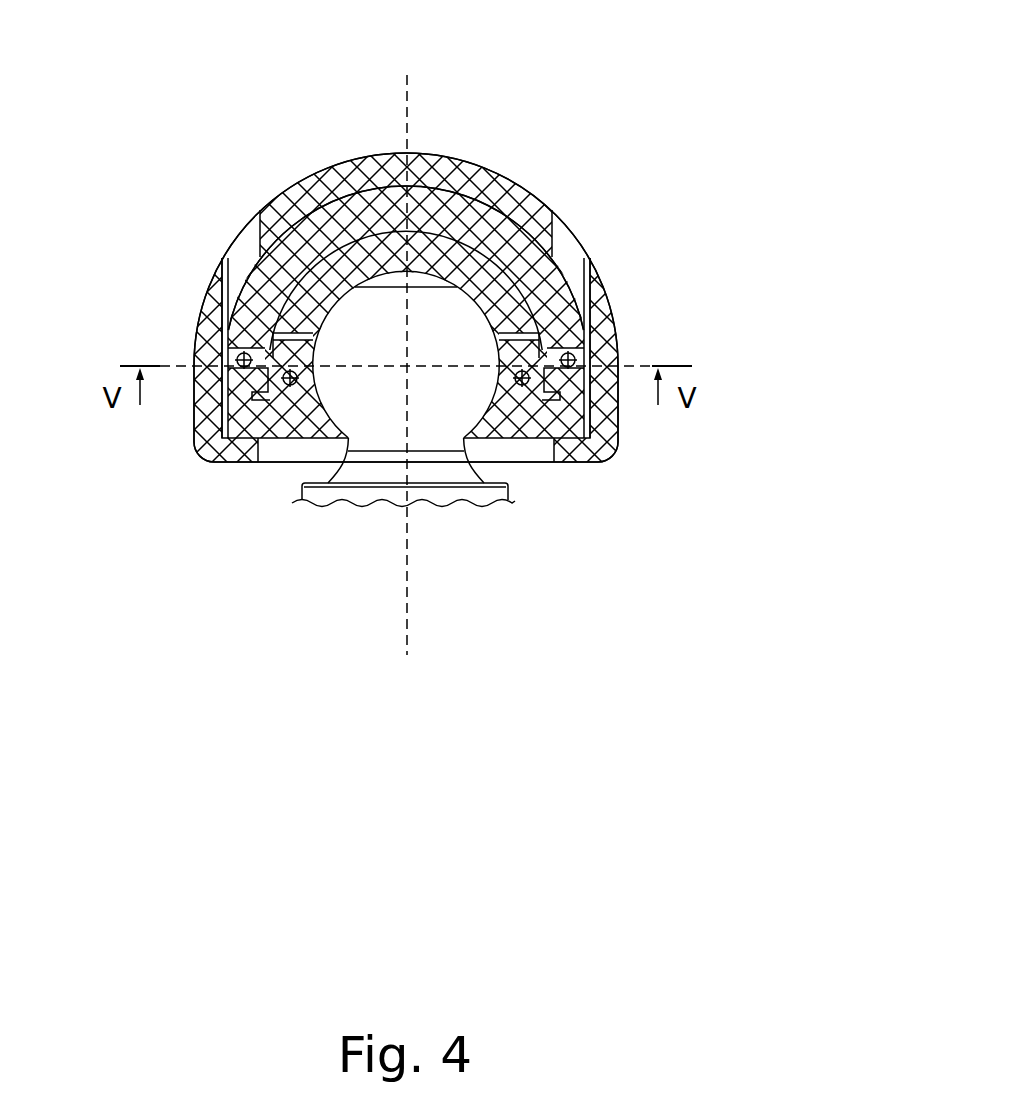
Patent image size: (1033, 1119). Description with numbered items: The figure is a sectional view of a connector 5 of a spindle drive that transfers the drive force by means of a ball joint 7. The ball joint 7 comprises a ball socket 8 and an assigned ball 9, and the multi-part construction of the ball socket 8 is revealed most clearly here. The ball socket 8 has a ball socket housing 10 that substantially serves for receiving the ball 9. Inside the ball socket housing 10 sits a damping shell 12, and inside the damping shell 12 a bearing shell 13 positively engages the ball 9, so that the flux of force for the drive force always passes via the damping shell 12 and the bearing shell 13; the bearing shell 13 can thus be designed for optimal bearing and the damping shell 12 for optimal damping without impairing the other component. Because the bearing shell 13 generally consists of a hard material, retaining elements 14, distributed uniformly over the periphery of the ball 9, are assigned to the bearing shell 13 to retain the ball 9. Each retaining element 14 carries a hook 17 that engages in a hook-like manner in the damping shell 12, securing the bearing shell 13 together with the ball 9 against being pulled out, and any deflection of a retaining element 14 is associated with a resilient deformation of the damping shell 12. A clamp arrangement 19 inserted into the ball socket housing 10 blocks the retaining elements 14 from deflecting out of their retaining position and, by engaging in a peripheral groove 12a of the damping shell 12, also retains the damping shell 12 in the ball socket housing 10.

The connector 5 is at (615, 120).
The ball joint 7 is at (548, 480).
The ball socket 8 is at (603, 316).
The ball socket housing 10 is at (406, 348).
The ball 9 is at (378, 406).
The damping shell 12 is at (437, 205).
The peripheral groove 12a is at (592, 343).
The bearing shell 13 is at (345, 262).
The retaining element 14 is at (292, 400).
The hook 17 is at (255, 400).
The clamp arrangement 19 is at (205, 292).